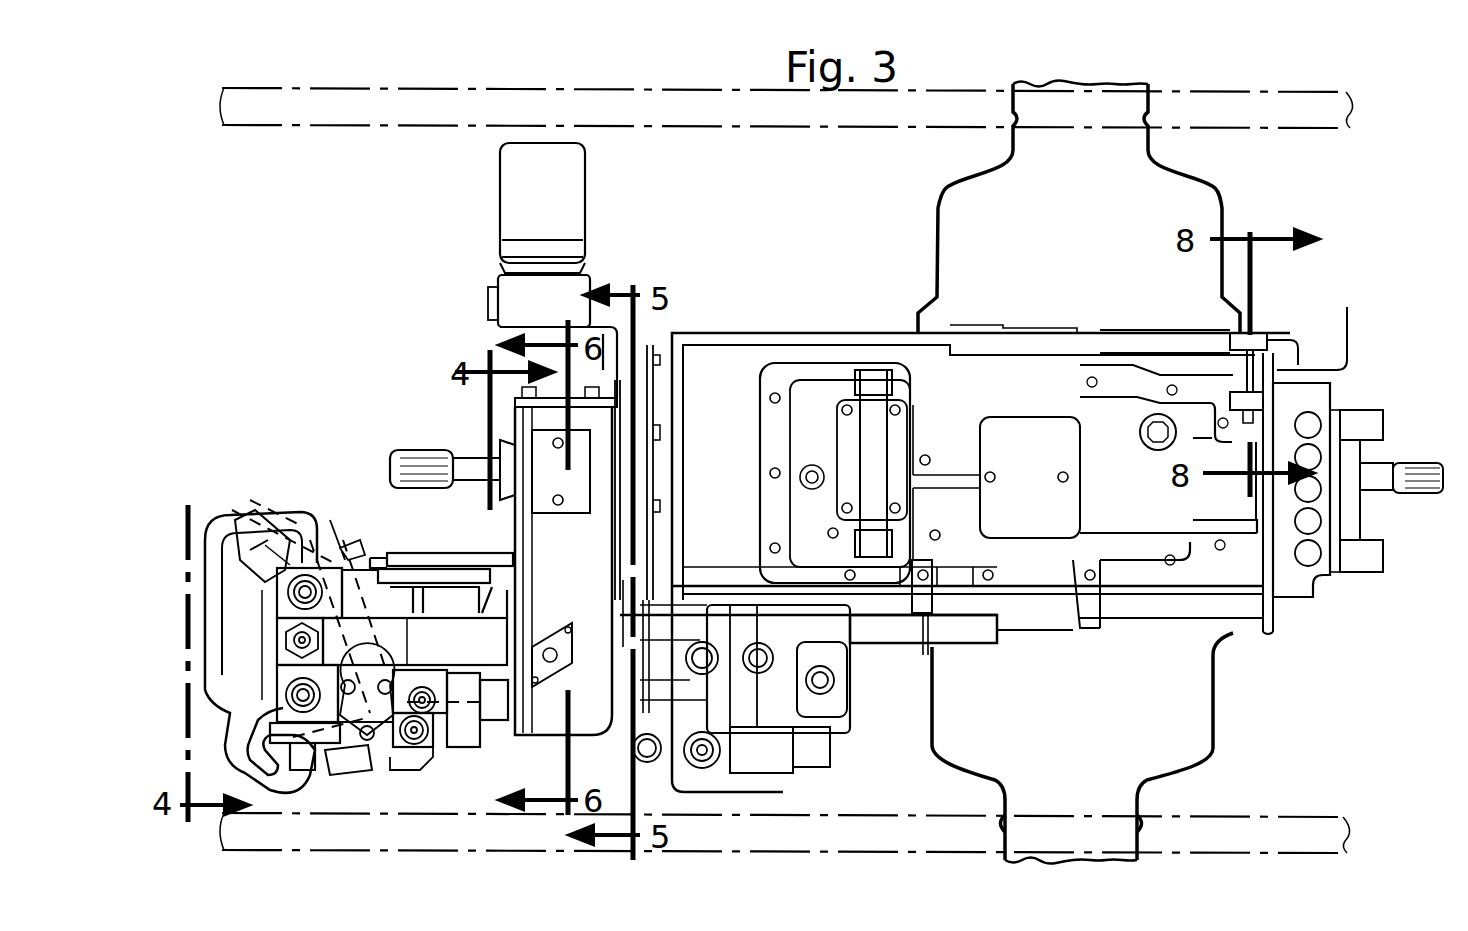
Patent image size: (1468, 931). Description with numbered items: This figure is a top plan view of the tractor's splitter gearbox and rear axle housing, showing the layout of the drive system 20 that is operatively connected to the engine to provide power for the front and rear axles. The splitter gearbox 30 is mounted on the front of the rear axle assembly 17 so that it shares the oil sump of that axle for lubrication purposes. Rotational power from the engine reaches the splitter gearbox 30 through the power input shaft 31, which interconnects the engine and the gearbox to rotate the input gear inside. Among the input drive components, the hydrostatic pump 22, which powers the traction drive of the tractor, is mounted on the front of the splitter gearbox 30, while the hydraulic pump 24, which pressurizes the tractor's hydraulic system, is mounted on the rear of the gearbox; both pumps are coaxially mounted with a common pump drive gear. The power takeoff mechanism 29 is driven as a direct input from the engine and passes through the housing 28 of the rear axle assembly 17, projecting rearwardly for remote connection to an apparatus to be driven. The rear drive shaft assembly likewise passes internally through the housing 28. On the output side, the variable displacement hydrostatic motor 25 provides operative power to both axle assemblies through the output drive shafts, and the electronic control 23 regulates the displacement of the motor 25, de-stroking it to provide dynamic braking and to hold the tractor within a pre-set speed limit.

The rear axle assembly 17 is at (1215, 695).
The drive system 20 is at (358, 302).
The hydrostatic pump 22 is at (500, 727).
The electronic control 23 is at (225, 555).
The hydraulic pump 24 is at (853, 733).
The variable displacement hydrostatic motor 25 is at (347, 775).
The housing 28 is at (718, 353).
The power takeoff (PTO) mechanism 29 is at (1417, 463).
The splitter gearbox 30 is at (520, 740).
The power input shaft 31 is at (407, 450).